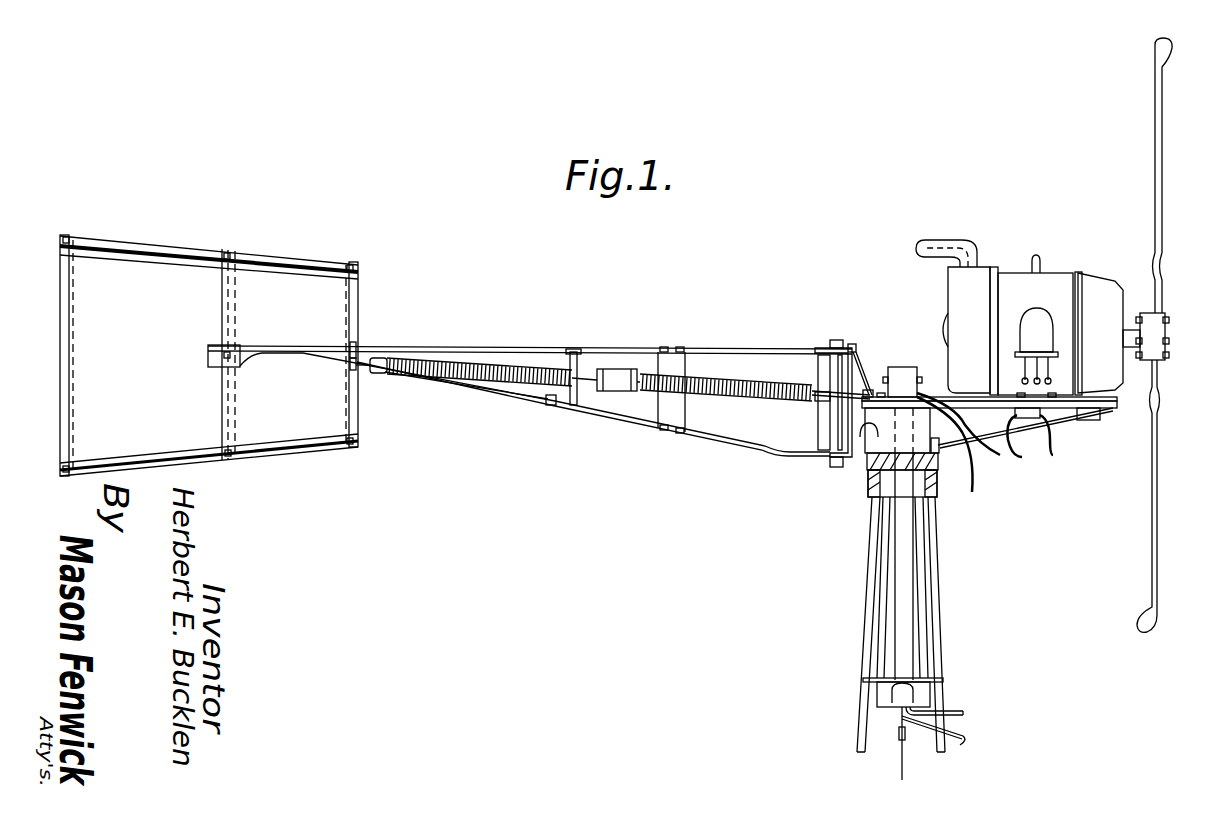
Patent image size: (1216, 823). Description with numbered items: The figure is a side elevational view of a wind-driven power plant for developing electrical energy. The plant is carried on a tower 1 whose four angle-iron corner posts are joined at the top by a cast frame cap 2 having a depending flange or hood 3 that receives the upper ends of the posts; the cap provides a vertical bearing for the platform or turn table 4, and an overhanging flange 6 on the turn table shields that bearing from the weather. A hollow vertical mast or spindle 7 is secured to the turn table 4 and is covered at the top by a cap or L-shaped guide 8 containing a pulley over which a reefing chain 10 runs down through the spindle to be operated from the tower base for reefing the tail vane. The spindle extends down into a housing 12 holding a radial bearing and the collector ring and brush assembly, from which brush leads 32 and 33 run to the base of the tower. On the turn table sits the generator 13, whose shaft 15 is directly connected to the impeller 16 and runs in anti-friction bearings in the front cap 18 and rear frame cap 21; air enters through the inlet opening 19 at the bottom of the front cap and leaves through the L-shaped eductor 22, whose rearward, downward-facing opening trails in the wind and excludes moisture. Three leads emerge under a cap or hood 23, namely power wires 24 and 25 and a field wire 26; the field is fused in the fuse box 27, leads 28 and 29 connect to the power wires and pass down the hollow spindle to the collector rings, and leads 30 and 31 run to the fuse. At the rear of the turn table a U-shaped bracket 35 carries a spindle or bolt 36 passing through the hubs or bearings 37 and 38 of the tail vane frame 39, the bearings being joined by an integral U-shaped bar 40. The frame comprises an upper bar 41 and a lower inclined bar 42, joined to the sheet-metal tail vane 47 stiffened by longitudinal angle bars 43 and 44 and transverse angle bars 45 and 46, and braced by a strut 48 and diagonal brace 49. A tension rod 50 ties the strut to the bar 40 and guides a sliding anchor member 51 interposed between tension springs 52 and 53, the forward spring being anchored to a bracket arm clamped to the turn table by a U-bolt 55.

The tower 1 is at (938, 590).
The cast frame cap 2 is at (868, 480).
The depending flange or hood 3 is at (875, 500).
The platform or turn table 4 is at (1080, 414).
The overhanging flange 6 is at (937, 450).
The vertical mast or spindle 7 is at (900, 553).
The cap or L-shaped guide 8 is at (903, 367).
The reefing chain 10 is at (905, 735).
The housing 12 is at (882, 690).
The generator 13 is at (1010, 275).
The shaft 15 is at (1166, 333).
The impeller 16 is at (1163, 188).
The front cap 18 is at (1093, 290).
The air inlet opening 19 is at (1098, 418).
The rear frame cap 21 is at (958, 292).
The L-shaped eductor 22 is at (942, 243).
The cap or hood 23 is at (1038, 322).
The power wire 24 is at (1025, 378).
The power wire 25 is at (1045, 378).
The field wire 26 is at (1050, 382).
The fuse box 27 is at (1032, 420).
The lead 28 is at (1000, 460).
The lead 29 is at (973, 495).
The lead 30 is at (1023, 460).
The lead 31 is at (1055, 458).
The brush lead 32 is at (963, 712).
The brush lead 33 is at (967, 740).
The U-shaped bracket 35 is at (853, 346).
The spindle or bolt 36 is at (836, 402).
The hub or bearing 37 is at (834, 342).
The hub or bearing 38 is at (830, 463).
The tail vane frame 39 is at (700, 350).
The U-shaped bar 40 is at (816, 357).
The upper bar 41 is at (613, 350).
The lower inclined bar 42 is at (632, 418).
The longitudinal angle bar 43 is at (180, 248).
The longitudinal angle bar 44 is at (255, 453).
The transverse angle bar 45 is at (72, 330).
The transverse angle bar 46 is at (235, 306).
The tail vane / transverse angle bar 47 is at (352, 318).
The strut 48 is at (572, 360).
The diagonal brace 49 is at (498, 385).
The tension rod 50 is at (757, 377).
The sliding anchor member 51 is at (613, 388).
The tension spring 52 is at (448, 378).
The tension spring 53 is at (758, 397).
The U-bolt or clamp 55 is at (867, 392).